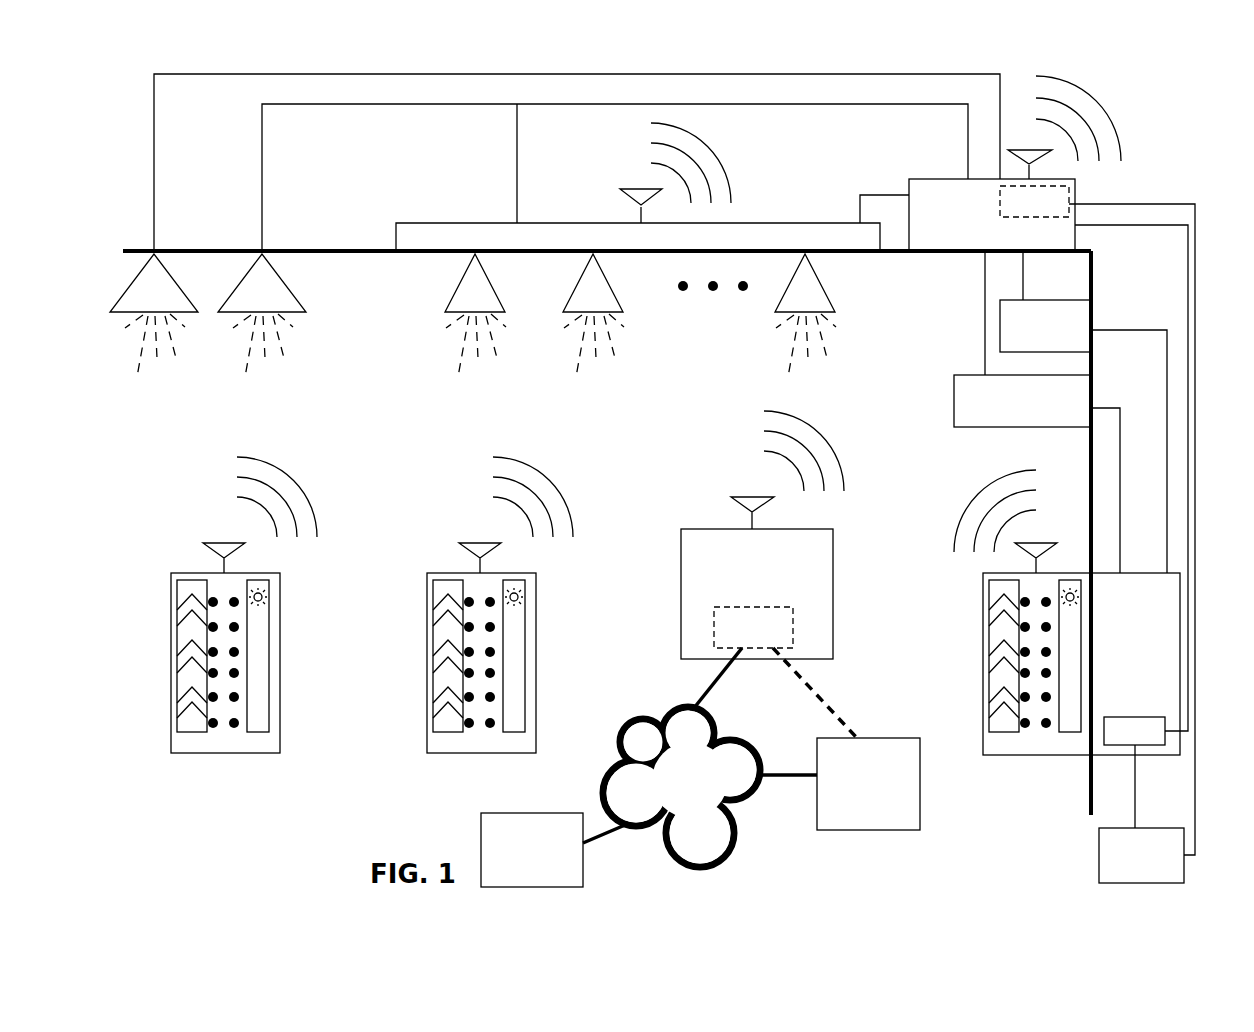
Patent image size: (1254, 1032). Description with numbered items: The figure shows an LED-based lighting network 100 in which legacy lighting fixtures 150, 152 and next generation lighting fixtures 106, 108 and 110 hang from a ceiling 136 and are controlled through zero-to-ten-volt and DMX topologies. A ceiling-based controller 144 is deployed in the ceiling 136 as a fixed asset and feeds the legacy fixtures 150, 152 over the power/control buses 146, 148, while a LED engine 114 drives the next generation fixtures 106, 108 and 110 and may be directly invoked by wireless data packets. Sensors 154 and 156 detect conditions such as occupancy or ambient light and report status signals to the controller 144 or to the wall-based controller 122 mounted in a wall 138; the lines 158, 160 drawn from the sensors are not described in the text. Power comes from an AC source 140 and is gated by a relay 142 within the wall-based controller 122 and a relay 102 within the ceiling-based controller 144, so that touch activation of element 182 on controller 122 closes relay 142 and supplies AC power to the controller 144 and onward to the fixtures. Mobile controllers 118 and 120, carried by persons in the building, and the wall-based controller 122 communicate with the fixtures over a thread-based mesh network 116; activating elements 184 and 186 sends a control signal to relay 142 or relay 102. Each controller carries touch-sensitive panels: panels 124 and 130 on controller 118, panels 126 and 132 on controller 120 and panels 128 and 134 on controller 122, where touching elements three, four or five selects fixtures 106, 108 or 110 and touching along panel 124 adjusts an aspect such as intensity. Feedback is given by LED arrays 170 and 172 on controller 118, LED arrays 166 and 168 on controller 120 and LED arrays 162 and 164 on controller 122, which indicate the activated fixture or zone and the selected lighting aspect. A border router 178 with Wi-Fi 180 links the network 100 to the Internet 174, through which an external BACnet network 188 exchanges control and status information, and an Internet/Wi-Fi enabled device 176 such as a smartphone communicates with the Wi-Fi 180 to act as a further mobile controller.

The network 100 is at (1204, 458).
The relay 102 is at (1050, 217).
The next generation lighting fixture 106 is at (492, 282).
The next generation lighting fixture 108 is at (610, 282).
The next generation lighting fixture 110 is at (820, 282).
The LED engine 114 is at (754, 223).
The thread-based mesh network 116 is at (716, 155).
The mobile controller 118 is at (236, 674).
The mobile controller 120 is at (493, 673).
The wall-based controller 122 is at (1047, 673).
The panel 124 is at (185, 690).
The panel 126 is at (441, 688).
The panel 128 is at (992, 685).
The panel 130 is at (265, 677).
The panel 132 is at (522, 673).
The panel 134 is at (1082, 637).
The ceiling 136 is at (310, 250).
The wall 138 is at (1091, 462).
The AC source 140 is at (1099, 855).
The relay 142 is at (1152, 717).
The ceiling-based controller 144 is at (975, 196).
The power/control bus 146 is at (893, 74).
The power/control bus 148 is at (848, 104).
The legacy lighting fixture 150 is at (177, 280).
The legacy lighting fixture 152 is at (285, 280).
The sensor 154 is at (1055, 300).
The sensor 156 is at (954, 390).
The sensor connection 158 is at (1110, 330).
The sensor connection 160 is at (1100, 408).
The LED array 162 is at (1046, 728).
The LED array 164 is at (1025, 728).
The LED array 166 is at (490, 728).
The LED array 168 is at (469, 728).
The LED array 170 is at (234, 728).
The LED array 172 is at (213, 728).
The Internet 174 is at (655, 720).
The device 176 is at (880, 738).
The border router 178 is at (775, 578).
The Wi-Fi 180 is at (745, 607).
The element 182 is at (1080, 598).
The element 184 is at (268, 598).
The element 186 is at (525, 596).
The external BACnet network 188 is at (583, 870).